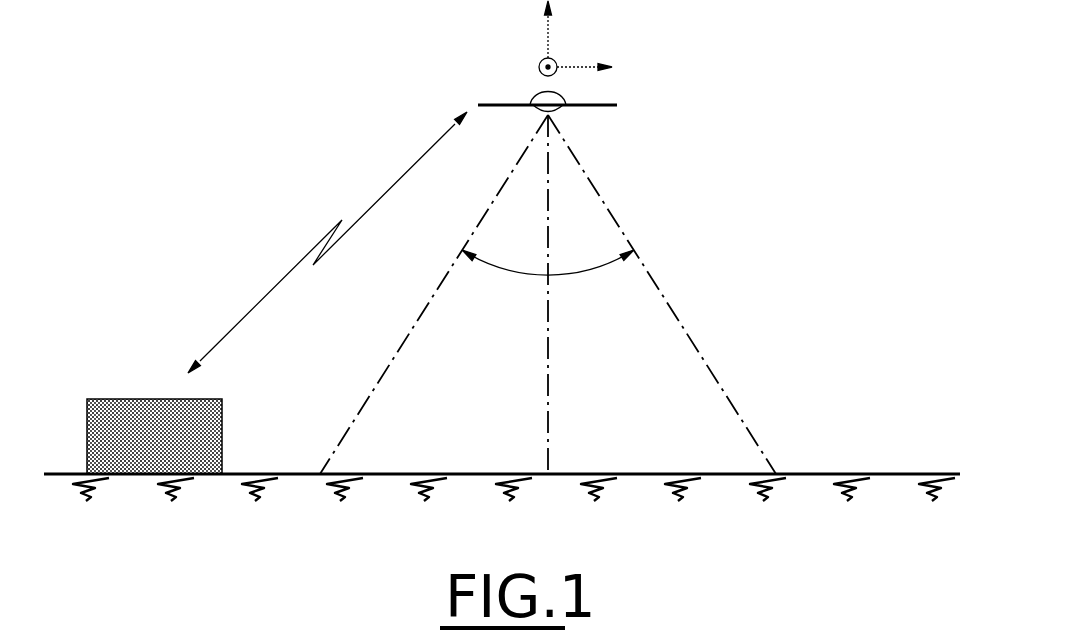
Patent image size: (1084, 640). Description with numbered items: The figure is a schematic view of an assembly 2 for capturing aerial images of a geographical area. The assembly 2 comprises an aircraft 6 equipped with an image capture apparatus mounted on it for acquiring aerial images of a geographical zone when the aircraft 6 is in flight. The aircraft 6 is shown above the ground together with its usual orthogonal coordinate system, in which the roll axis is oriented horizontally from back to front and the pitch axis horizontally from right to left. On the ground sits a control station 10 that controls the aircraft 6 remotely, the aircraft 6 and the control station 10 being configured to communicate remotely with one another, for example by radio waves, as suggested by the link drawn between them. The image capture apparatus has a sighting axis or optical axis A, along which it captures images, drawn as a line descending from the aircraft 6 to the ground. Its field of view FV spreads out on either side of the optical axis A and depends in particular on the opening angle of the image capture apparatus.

The assembly 2 is at (302, 112).
The aircraft 6 is at (488, 88).
The control station 10 is at (118, 418).
The field of view FV is at (383, 372).
The optical axis A is at (548, 448).